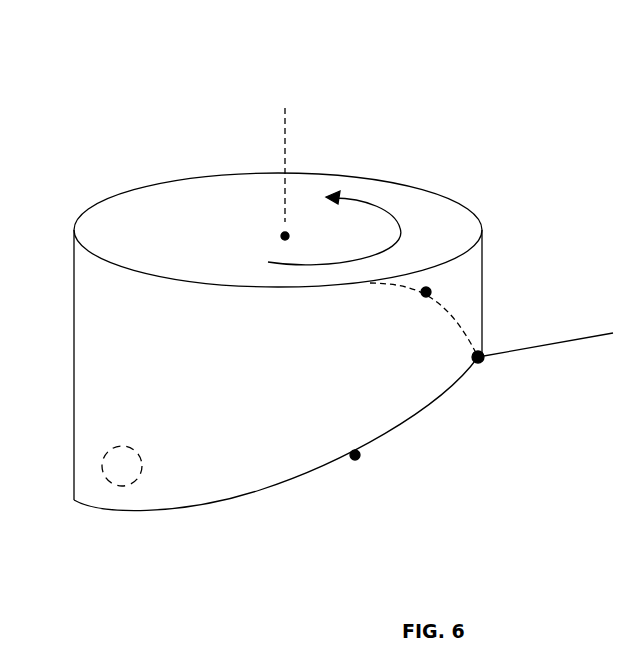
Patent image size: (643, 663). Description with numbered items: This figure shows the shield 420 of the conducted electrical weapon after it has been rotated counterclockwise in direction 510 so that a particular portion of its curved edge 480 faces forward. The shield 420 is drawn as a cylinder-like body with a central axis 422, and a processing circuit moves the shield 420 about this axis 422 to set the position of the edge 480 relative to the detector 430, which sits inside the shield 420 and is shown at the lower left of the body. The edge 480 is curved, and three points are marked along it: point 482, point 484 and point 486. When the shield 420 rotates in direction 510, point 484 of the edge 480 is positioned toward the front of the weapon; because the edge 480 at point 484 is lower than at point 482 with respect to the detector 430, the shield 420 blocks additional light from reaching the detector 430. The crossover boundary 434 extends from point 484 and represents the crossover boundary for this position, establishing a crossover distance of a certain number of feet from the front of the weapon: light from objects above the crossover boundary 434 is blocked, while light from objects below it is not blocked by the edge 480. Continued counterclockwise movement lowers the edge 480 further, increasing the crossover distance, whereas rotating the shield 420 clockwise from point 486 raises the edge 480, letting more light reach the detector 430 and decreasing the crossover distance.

The shield 420 is at (261, 287).
The axis 422 is at (284, 128).
The detector 430 is at (100, 466).
The crossover boundary 434 is at (537, 350).
The edge 480 is at (197, 510).
The point 482 is at (450, 292).
The point 484 is at (487, 384).
The point 486 is at (360, 460).
The direction 510 is at (385, 212).